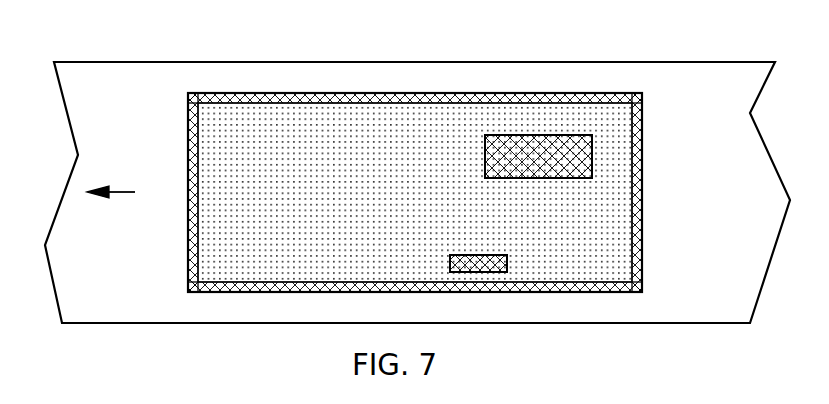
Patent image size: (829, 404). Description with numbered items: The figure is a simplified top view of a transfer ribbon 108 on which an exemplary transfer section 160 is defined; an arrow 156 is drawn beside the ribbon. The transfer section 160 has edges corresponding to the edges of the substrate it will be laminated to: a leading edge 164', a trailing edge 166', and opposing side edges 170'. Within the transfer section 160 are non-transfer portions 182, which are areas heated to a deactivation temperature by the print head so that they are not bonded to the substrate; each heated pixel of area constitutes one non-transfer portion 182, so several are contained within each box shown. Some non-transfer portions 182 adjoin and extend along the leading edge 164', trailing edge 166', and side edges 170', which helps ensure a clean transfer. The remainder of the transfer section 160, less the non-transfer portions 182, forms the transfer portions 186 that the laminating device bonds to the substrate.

The transfer ribbon 108 is at (107, 70).
The direction of travel arrow 156 is at (122, 192).
The transfer section 160 is at (414, 190).
The leading edge 164' is at (160, 192).
The trailing edge 166' is at (668, 192).
The side edges 170' is at (415, 191).
The non-transfer portions 182 is at (520, 145).
The transfer portions 186 is at (203, 143).